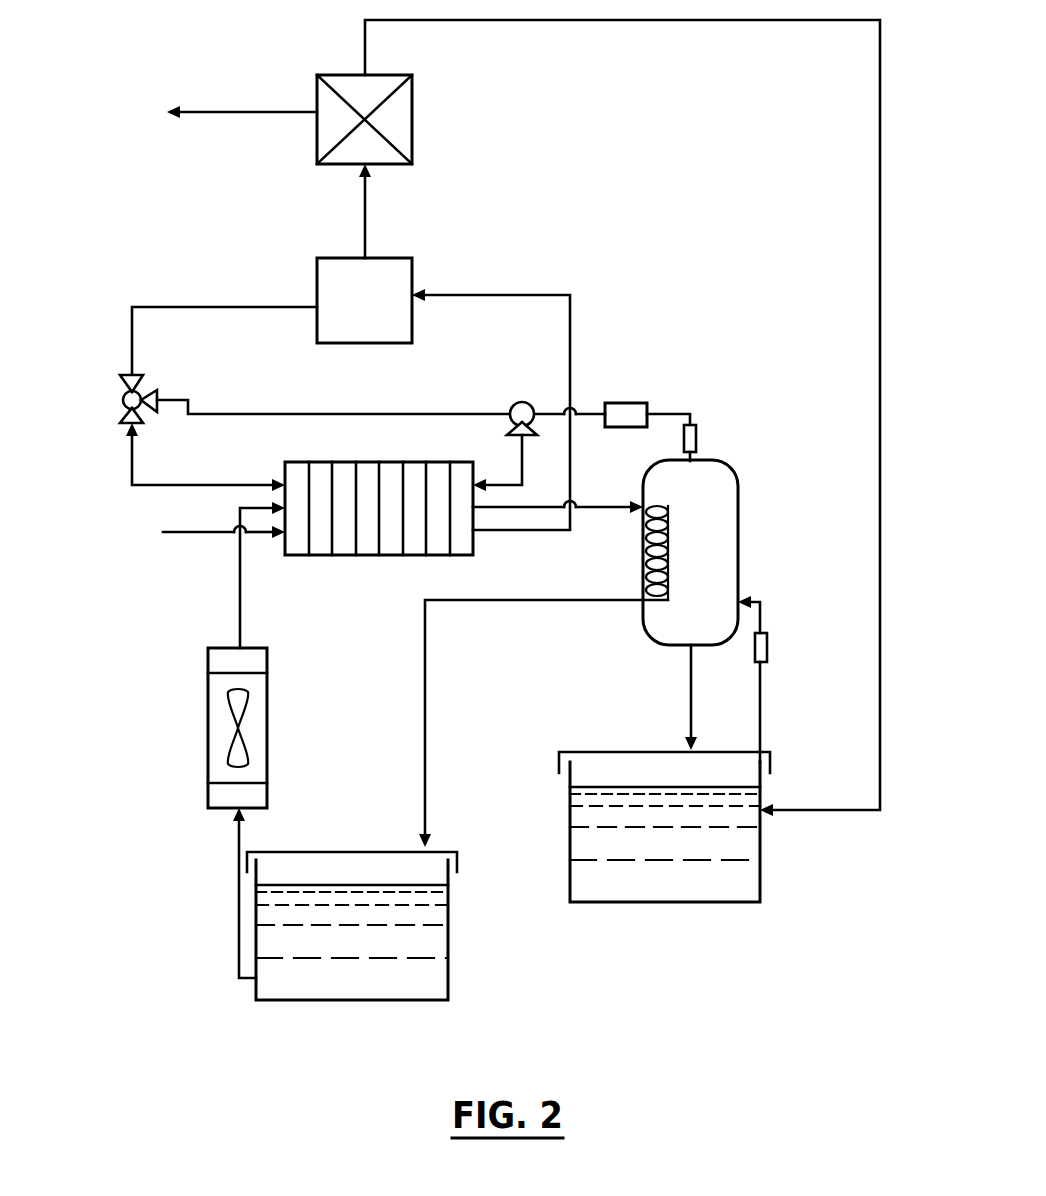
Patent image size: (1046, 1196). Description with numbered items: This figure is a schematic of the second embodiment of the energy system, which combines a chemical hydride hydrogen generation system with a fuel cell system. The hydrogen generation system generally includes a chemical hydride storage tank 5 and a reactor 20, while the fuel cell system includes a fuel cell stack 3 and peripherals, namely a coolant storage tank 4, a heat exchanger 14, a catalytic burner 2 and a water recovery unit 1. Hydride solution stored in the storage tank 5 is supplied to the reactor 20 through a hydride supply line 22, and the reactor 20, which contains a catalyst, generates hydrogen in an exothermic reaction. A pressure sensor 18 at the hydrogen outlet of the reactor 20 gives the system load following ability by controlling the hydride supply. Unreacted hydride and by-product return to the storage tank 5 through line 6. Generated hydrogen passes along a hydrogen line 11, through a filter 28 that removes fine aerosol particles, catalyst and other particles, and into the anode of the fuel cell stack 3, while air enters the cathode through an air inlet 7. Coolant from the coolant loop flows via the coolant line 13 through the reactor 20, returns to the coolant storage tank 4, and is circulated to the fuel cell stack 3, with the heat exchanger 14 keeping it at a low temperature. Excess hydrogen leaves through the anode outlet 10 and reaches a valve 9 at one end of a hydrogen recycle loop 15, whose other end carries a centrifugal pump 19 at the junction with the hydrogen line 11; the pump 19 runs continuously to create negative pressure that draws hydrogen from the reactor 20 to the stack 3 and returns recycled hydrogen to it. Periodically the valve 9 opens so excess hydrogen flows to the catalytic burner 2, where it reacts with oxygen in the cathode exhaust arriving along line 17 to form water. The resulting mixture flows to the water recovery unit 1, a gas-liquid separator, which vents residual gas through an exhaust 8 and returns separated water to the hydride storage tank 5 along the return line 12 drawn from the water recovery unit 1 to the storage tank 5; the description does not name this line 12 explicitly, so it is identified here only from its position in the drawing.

The water recovery unit 1 is at (413, 120).
The catalytic burner 2 is at (395, 344).
The fuel cell stack 3 is at (380, 557).
The coolant storage tank 4 is at (436, 980).
The chemical hydride storage tank 5 is at (748, 884).
The line 6 is at (689, 673).
The air inlet 7 is at (165, 533).
The exhaust 8 is at (203, 114).
The valve 9 is at (122, 395).
The anode outlet 10 is at (172, 485).
The hydrogen line 11 is at (670, 418).
The return line 12 is at (878, 770).
The coolant line 13 is at (242, 605).
The heat exchanger 14 is at (208, 738).
The hydrogen recycle loop 15 is at (343, 413).
The discharged airline 17 is at (572, 295).
The pressure sensor 18 is at (698, 440).
The centrifugal pump 19 is at (520, 401).
The reactor 20 is at (713, 570).
The hydride supply line 22 is at (762, 710).
The filter 28 is at (640, 403).